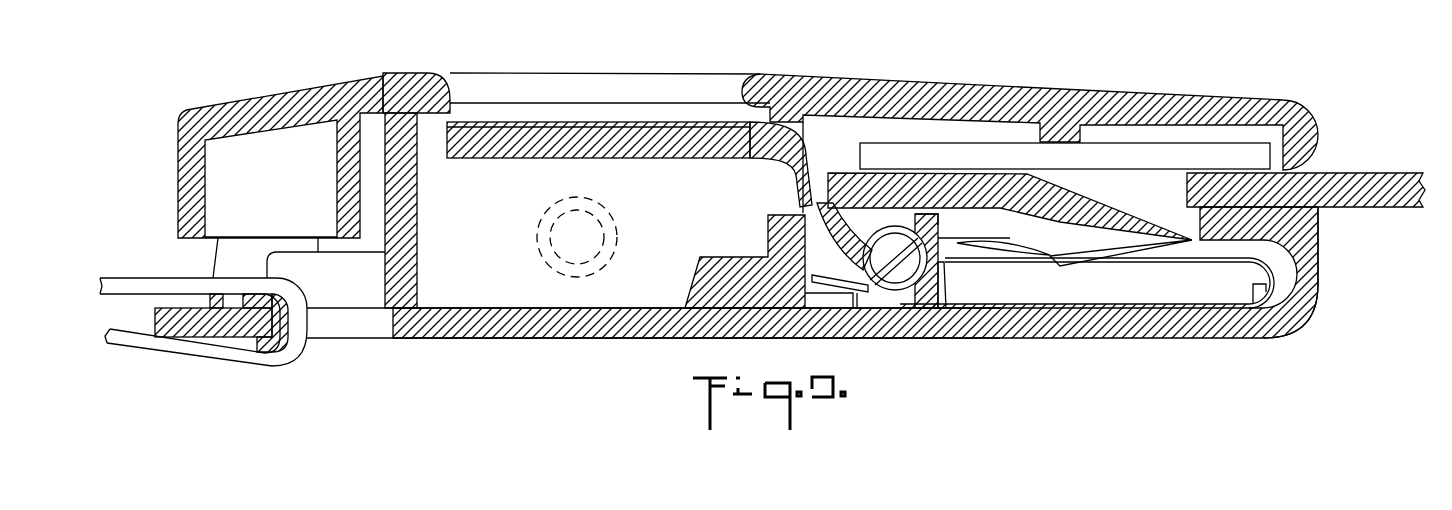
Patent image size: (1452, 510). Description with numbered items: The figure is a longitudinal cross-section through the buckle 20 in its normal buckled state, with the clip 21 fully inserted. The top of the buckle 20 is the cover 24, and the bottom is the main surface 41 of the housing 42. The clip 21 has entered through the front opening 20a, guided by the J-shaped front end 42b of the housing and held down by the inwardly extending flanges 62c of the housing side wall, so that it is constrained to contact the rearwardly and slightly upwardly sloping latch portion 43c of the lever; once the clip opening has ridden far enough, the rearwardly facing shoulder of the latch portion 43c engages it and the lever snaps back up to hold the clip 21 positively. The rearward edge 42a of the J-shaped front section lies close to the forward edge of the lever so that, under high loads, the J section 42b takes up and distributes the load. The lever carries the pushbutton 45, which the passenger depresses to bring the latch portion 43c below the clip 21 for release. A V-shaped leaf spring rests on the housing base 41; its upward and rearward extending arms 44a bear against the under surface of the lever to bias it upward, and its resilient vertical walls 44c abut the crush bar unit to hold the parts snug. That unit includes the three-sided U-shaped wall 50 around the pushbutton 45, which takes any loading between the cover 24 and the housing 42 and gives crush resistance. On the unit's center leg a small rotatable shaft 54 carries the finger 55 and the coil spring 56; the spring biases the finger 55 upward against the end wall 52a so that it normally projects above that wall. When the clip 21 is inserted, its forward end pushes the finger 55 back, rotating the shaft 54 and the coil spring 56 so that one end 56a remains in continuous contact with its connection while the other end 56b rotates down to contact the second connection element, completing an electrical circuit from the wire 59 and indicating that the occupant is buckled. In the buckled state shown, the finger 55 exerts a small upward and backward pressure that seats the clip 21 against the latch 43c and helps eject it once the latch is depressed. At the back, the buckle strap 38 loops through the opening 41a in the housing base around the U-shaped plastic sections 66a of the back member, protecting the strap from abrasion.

The buckle 20 is at (900, 32).
The front opening 20a is at (1307, 223).
The clip 21 is at (1375, 183).
The cover 24 is at (1132, 93).
The buckle strap 38 is at (138, 277).
The main surface of the housing 41 is at (543, 300).
The opening in the base of the housing 41a is at (376, 327).
The housing 42 is at (450, 337).
The rearward edge of the J-shaped front section 42a is at (1200, 240).
The J-shaped front end of the housing 42b is at (1307, 265).
The latch portion 43c is at (1013, 190).
The arms of the leaf spring 44a is at (1018, 268).
The resilient vertical walls 44c is at (940, 300).
The pushbutton 45 is at (595, 160).
The U-shaped wall 50 is at (418, 212).
The end wall of the center leg 52a is at (920, 237).
The rotatable shaft 54 is at (897, 240).
The finger 55 is at (817, 203).
The coil spring 56 is at (920, 287).
The end of the coil spring 56a is at (833, 283).
The other end of the coil spring 56b is at (746, 261).
The wire 59 is at (857, 293).
The inwardly extending flanges 62c is at (1183, 150).
The sections of the back member 66a is at (282, 340).